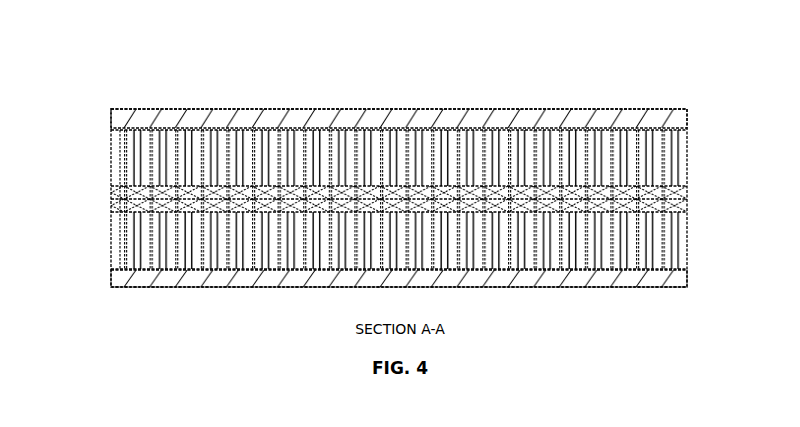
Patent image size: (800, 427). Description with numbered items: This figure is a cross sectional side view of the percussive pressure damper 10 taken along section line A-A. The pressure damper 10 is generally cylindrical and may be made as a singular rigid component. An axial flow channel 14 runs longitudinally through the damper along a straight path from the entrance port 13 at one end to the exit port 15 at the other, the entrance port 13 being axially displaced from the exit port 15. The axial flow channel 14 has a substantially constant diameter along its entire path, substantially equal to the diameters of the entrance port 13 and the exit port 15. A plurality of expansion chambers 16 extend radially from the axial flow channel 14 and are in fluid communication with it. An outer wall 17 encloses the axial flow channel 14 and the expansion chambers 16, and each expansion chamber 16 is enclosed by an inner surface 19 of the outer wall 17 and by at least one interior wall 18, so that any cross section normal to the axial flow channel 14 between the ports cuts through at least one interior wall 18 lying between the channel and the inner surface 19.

The pressure damper 10 is at (393, 41).
The entrance port 13 is at (112, 192).
The axial flow channel 14 is at (110, 201).
The exit port 15 is at (688, 188).
The expansion chamber 16 is at (118, 160).
The outer wall 17 is at (240, 110).
The interior wall 18 is at (127, 160).
The inner surface 19 is at (116, 132).